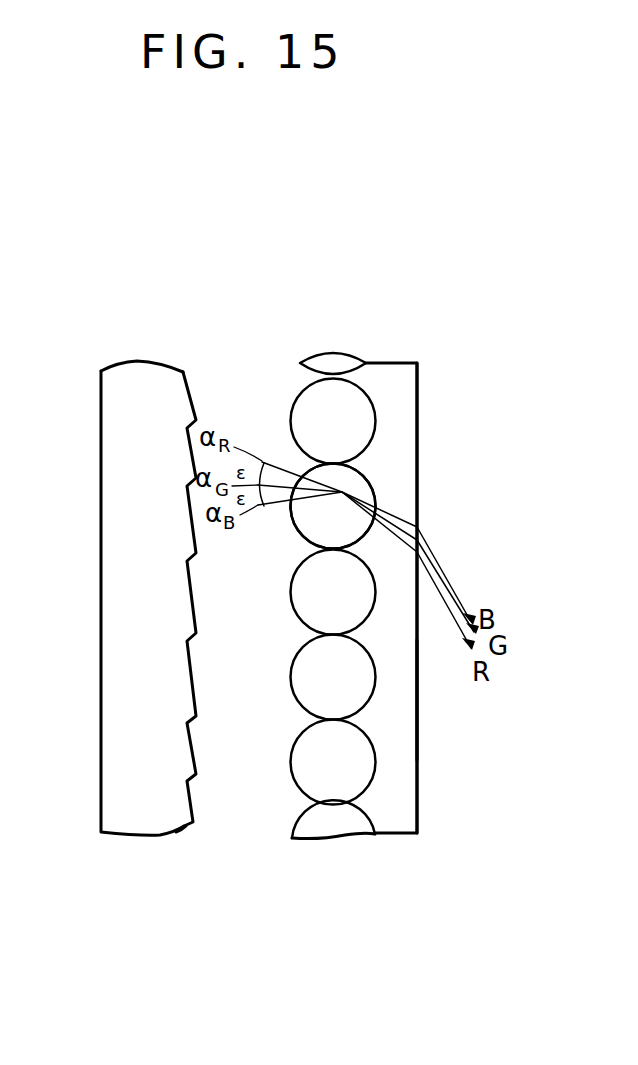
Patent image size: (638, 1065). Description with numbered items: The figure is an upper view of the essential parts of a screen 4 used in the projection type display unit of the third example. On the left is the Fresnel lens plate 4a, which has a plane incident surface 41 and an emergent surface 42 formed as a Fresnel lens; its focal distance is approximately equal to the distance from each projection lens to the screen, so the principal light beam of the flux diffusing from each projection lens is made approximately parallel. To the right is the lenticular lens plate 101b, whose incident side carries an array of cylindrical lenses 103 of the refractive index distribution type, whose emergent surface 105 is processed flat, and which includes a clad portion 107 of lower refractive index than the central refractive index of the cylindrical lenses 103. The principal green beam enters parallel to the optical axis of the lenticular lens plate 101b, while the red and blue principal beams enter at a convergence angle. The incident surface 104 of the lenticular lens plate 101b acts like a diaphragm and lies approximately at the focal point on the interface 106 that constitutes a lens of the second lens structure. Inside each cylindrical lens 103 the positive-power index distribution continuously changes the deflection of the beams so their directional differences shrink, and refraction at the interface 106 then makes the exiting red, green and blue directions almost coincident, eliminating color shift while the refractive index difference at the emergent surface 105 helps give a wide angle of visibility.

The screen 4 is at (332, 304).
The incident surface 41 is at (101, 733).
The emergent surface 42 is at (191, 395).
The Fresnel lens plate 4a is at (186, 828).
The cylindrical lens 103 is at (346, 366).
The incident surface 104 is at (292, 585).
The emergent surface 105 is at (419, 398).
The interface 106 is at (377, 497).
The clad portion 107 is at (395, 688).
The lenticular lens plate 101b is at (410, 853).